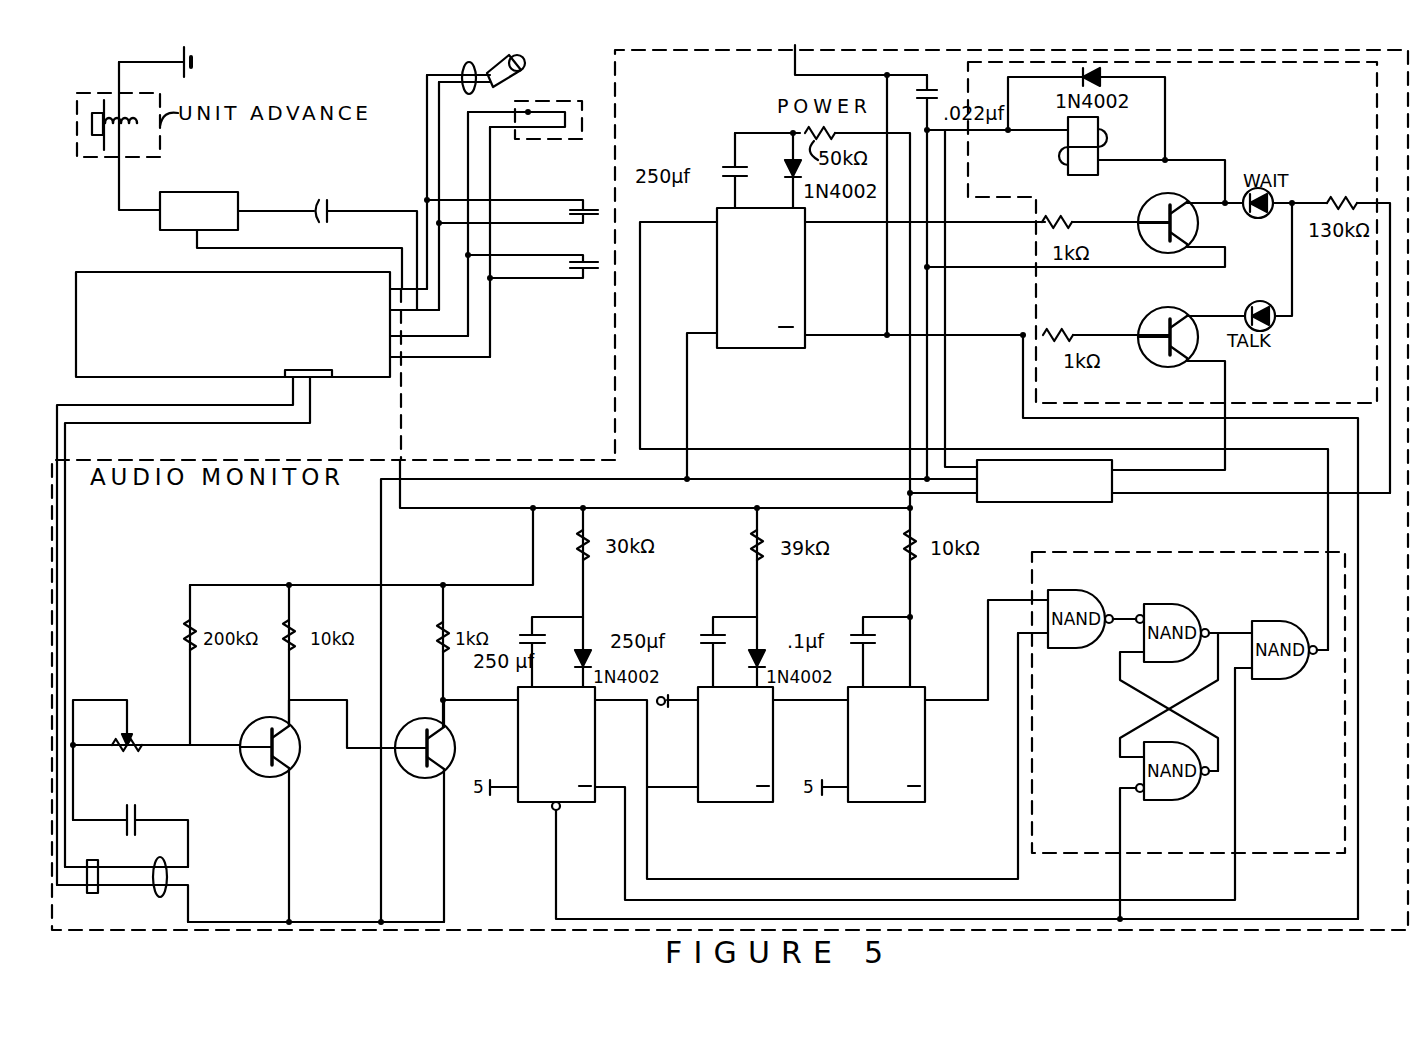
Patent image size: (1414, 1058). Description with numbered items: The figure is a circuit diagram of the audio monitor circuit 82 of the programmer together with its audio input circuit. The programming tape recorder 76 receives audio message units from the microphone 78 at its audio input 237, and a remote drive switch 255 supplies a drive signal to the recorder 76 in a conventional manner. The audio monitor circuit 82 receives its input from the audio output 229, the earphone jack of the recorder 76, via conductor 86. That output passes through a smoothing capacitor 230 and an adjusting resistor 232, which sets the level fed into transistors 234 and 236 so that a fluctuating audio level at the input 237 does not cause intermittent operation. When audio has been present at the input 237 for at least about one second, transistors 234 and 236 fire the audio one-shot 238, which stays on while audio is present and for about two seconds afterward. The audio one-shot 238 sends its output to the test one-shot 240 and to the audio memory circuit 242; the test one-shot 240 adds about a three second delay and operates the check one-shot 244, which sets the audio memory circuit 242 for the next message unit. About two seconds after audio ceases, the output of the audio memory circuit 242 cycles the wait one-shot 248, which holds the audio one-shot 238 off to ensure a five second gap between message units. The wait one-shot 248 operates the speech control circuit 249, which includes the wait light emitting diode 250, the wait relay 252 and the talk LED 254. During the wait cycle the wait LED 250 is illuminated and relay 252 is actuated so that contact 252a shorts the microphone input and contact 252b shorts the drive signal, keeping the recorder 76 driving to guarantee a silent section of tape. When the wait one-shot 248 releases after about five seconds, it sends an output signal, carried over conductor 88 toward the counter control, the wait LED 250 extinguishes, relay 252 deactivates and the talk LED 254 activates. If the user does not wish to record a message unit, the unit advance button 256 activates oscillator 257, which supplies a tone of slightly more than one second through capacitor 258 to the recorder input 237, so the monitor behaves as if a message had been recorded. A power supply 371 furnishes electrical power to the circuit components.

The programming tape recorder 76 is at (160, 367).
The microphone 78 is at (505, 86).
The audio monitor circuit 82 is at (1406, 541).
The conductor 86 is at (168, 896).
The conductor 88 is at (822, 76).
The audio output 229 is at (322, 380).
The smoothing capacitor 230 is at (178, 783).
The adjusting resistor 232 is at (128, 755).
The transistor 234 is at (336, 749).
The transistor 236 is at (490, 726).
The audio input 237 is at (462, 70).
The audio one-shot 238 is at (622, 726).
The test one-shot 240 is at (806, 726).
The audio memory circuit 242 is at (1272, 520).
The check one-shot 244 is at (928, 752).
The wait one-shot 248 is at (848, 265).
The speech control circuit 249 is at (1376, 128).
The wait light emitting diode 250 is at (1200, 212).
The wait relay 252 is at (1090, 178).
The relay contact 252a is at (511, 203).
The relay contact 252b is at (531, 256).
The talk LED 254 is at (1210, 279).
The remote drive switch 255 is at (525, 141).
The unit advance button 256 is at (158, 146).
The oscillator 257 is at (178, 232).
The capacitor 258 is at (322, 210).
The power supply 371 is at (1032, 460).